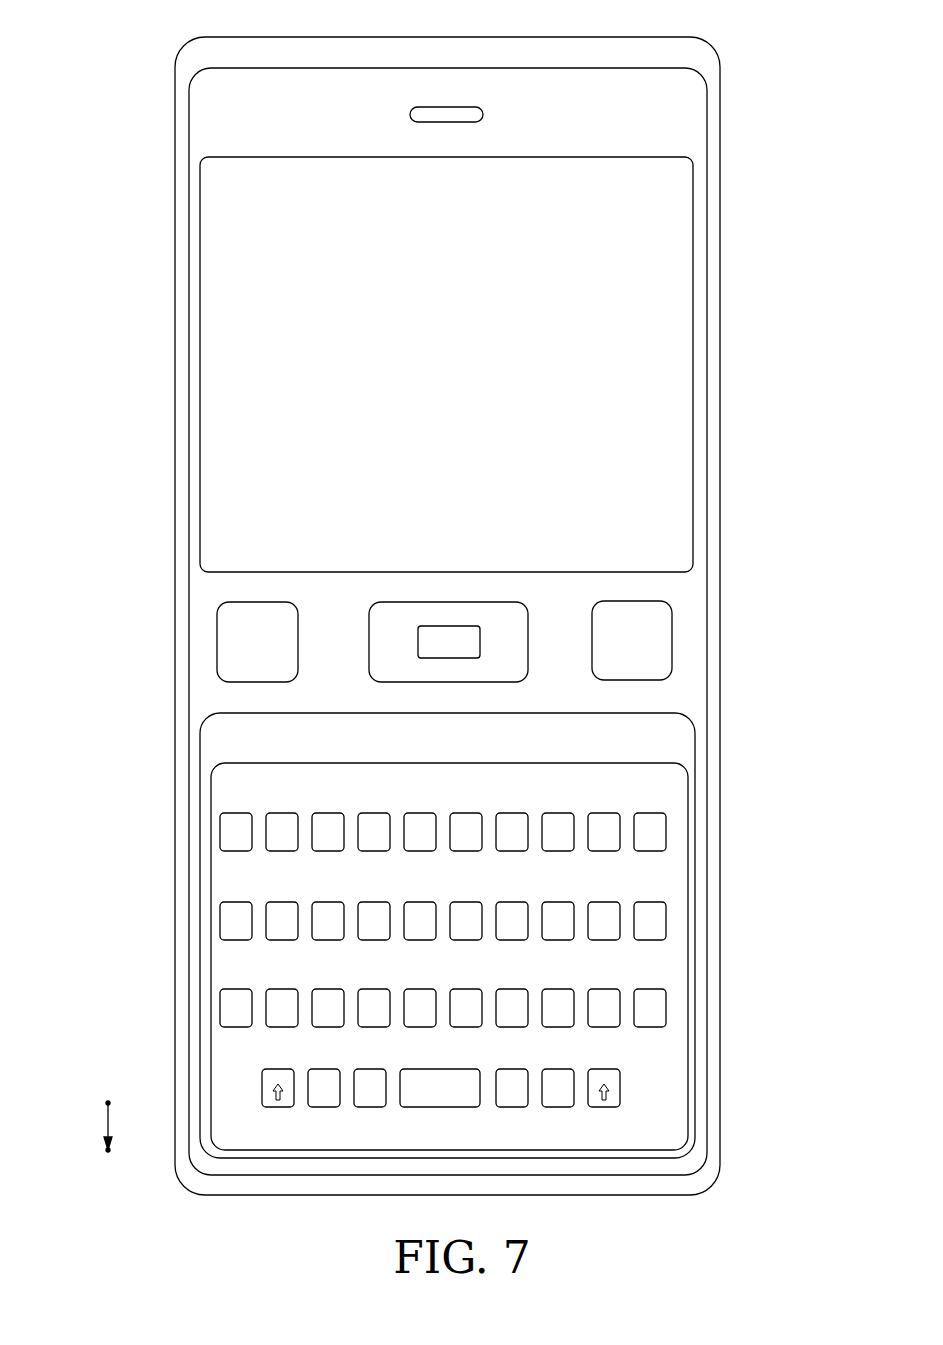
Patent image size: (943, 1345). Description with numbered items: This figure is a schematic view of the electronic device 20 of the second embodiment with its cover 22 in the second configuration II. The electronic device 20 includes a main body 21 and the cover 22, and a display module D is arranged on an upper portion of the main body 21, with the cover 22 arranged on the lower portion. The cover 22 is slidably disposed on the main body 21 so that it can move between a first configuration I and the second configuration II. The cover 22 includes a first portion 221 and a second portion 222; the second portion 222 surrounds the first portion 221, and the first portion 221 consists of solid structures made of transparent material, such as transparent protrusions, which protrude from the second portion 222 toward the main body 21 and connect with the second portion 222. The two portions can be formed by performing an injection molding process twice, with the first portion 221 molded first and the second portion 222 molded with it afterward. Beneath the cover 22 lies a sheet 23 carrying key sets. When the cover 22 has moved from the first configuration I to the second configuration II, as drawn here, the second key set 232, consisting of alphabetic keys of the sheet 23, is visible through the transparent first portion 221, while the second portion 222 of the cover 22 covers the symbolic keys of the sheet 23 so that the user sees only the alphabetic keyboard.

The electronic device 20 is at (88, 48).
The main body 21 is at (698, 353).
The display module D is at (670, 250).
The sheet 23 is at (675, 739).
The cover 22 is at (531, 956).
The first portion 221 is at (666, 918).
The second portion 222 is at (668, 967).
The second key set 232 is at (666, 827).
The first configuration I is at (212, 1103).
The second configuration II is at (227, 1150).